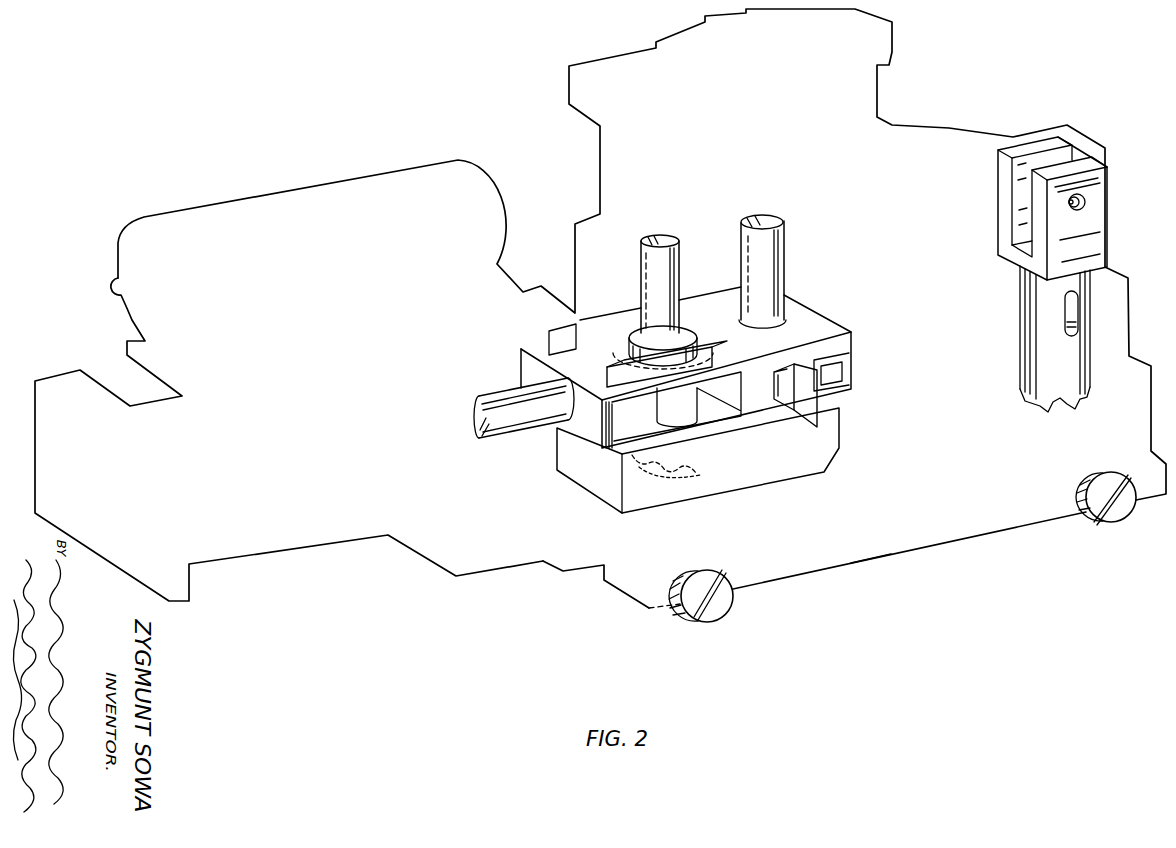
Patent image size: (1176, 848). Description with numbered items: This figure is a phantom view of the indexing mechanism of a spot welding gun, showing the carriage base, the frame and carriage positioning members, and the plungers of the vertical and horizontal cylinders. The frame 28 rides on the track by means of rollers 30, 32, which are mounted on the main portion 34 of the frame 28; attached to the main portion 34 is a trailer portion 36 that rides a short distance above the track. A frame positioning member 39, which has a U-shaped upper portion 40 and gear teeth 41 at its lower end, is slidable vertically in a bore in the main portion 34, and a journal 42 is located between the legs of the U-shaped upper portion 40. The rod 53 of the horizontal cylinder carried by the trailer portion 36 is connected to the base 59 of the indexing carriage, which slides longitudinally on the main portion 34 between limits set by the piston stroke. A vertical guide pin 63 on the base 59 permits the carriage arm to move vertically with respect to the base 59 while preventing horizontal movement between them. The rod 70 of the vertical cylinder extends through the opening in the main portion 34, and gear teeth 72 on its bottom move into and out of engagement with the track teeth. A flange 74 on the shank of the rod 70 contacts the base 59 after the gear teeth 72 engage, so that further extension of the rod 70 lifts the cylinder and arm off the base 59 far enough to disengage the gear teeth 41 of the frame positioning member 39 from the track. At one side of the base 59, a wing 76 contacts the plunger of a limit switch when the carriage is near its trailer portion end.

The frame 28 is at (943, 534).
The roller 30 is at (716, 586).
The roller 32 is at (1101, 517).
The main portion 34 is at (853, 541).
The trailer portion 36 is at (503, 533).
The frame positioning member 39 is at (1079, 244).
The U-shaped upper portion 40 is at (1095, 195).
The gear teeth 41 is at (1071, 402).
The journal 42 is at (1063, 197).
The rod 53 is at (496, 406).
The base 59 is at (812, 328).
The vertical guide pin 63 is at (762, 272).
The rod 70 is at (652, 302).
The gear teeth 72 is at (687, 455).
The flange 74 is at (612, 347).
The wing 76 is at (797, 393).